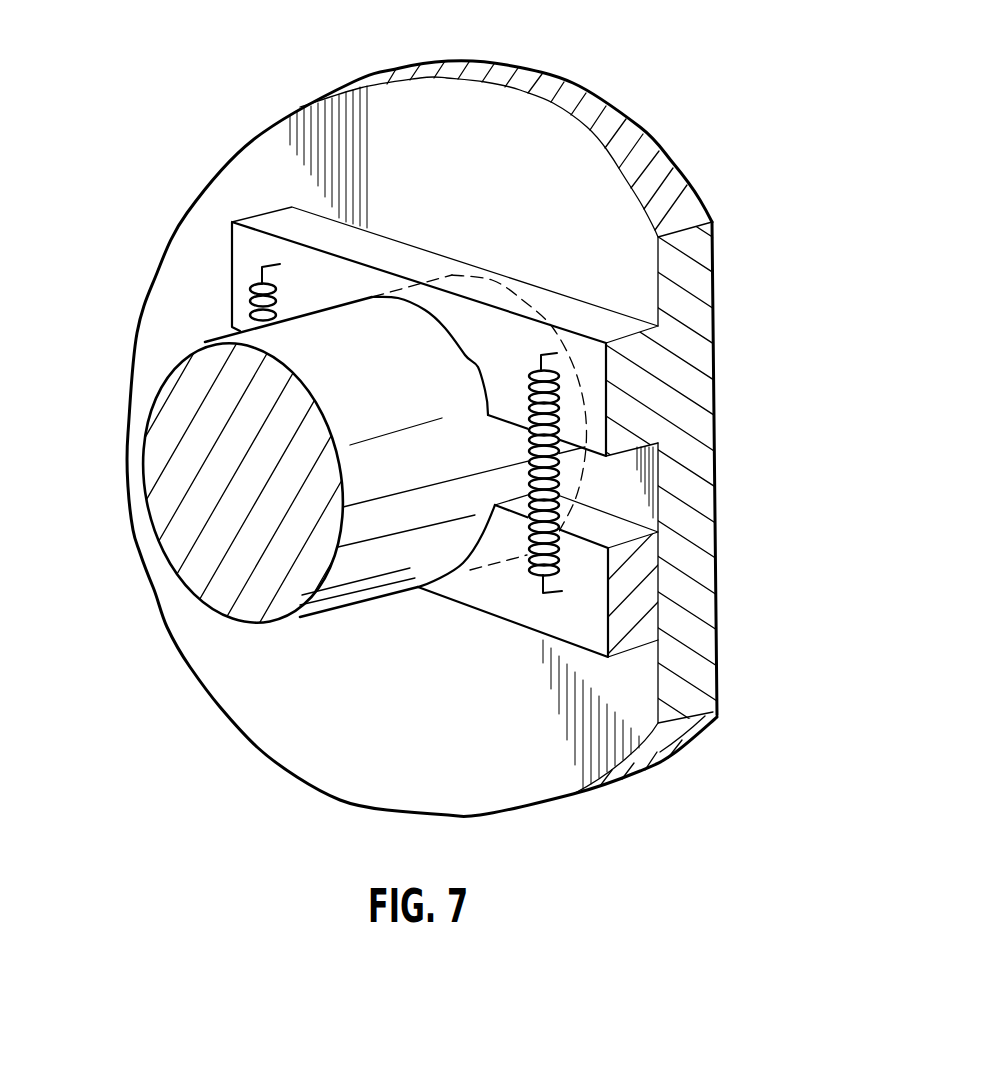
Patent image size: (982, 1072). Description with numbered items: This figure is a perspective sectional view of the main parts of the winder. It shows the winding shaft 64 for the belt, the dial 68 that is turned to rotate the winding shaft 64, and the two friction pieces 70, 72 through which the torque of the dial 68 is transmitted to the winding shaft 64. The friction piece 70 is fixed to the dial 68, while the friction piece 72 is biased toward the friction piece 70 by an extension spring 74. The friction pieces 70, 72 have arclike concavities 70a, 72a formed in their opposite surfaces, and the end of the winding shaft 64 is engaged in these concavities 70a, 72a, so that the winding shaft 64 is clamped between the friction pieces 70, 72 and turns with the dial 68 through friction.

The winding shaft 64 is at (190, 535).
The dial 68 is at (613, 182).
The friction piece 70 is at (428, 246).
The arclike concavity 70a is at (443, 330).
The friction piece 72 is at (512, 618).
The arclike concavity 72a is at (417, 590).
The extension spring 74 is at (255, 298).